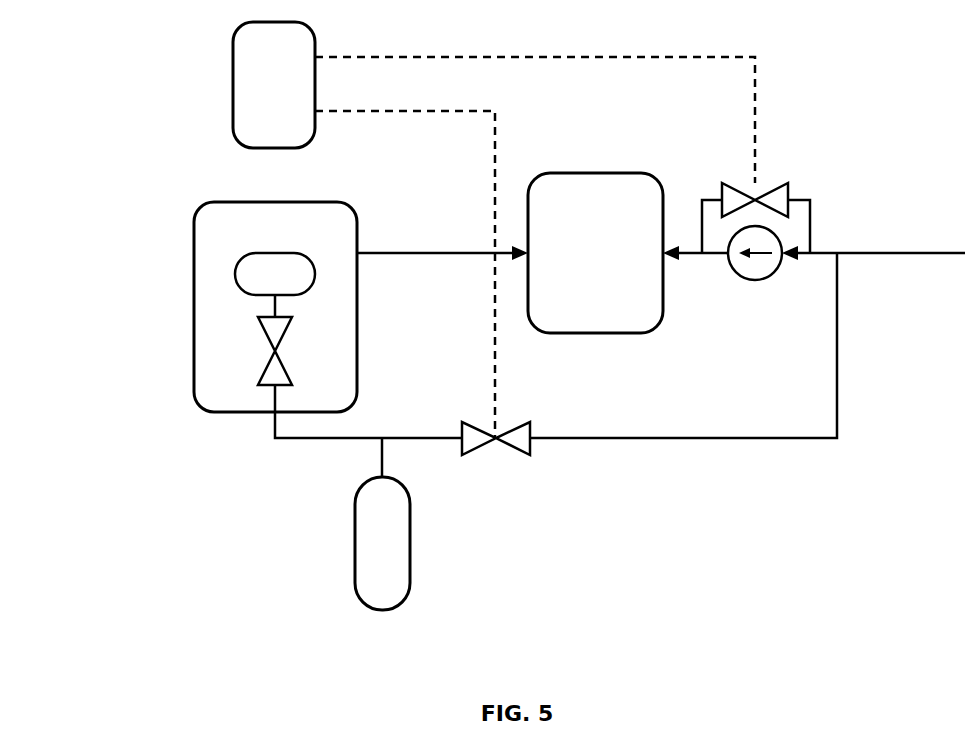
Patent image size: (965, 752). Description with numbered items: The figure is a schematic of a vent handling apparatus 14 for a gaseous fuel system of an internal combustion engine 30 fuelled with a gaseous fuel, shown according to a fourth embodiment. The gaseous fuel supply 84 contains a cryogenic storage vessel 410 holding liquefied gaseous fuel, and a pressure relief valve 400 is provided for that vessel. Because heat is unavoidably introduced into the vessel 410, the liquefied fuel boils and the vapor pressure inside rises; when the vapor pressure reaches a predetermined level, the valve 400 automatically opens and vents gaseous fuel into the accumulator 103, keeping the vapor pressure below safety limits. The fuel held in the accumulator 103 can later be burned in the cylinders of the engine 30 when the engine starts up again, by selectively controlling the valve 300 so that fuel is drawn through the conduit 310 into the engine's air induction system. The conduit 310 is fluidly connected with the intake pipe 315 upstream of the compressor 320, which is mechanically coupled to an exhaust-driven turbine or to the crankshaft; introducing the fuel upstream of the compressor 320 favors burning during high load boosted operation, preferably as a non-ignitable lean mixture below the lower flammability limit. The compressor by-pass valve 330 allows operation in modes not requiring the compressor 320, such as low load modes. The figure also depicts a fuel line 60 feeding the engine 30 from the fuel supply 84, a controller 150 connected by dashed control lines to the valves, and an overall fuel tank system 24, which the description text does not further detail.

The vent handling apparatus 14 is at (524, 506).
The fuel tank system 24 is at (106, 252).
The engine 30 is at (595, 253).
The fuel line 60 is at (437, 253).
The gaseous fuel supply 84 is at (275, 307).
The accumulator 103 is at (382, 524).
The controller 150 is at (494, 230).
The valve 300 is at (507, 430).
The conduit 310 is at (649, 440).
The intake pipe 315 is at (887, 253).
The compressor 320 is at (755, 281).
The compressor by-pass valve 330 is at (778, 186).
The pressure relief valve 400 is at (287, 360).
The cryogenic storage vessel 410 is at (275, 274).